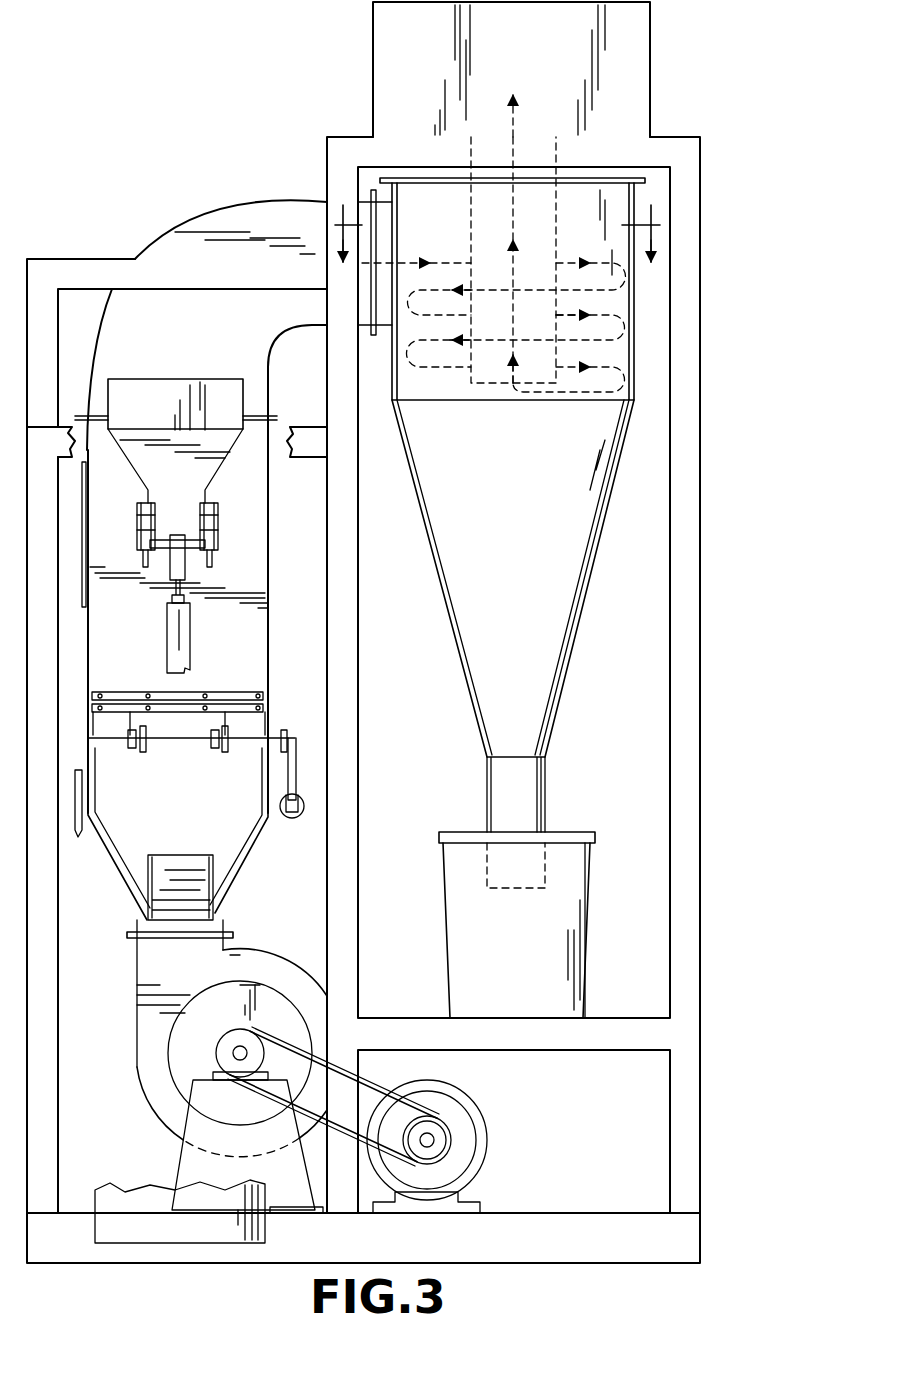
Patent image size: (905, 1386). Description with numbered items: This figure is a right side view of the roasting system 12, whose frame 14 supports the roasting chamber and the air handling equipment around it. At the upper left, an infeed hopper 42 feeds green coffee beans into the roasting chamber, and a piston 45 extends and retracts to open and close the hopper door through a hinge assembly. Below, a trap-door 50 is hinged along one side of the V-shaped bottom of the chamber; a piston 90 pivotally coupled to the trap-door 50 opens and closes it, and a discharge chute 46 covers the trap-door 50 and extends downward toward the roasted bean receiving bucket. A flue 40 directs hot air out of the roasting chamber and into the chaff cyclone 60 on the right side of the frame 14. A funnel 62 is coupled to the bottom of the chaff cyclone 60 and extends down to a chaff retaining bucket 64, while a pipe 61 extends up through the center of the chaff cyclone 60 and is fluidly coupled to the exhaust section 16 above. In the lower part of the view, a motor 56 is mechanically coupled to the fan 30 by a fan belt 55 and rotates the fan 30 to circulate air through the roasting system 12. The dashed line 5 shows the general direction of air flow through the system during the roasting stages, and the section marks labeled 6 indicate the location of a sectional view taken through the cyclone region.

The roasting system 12 is at (746, 78).
The frame 14 is at (700, 163).
The exhaust section 16 is at (652, 68).
The flue 40 is at (182, 222).
The infeed hopper 42 is at (148, 380).
The piston 45 is at (194, 636).
The trap-door 50 is at (118, 720).
The piston 90 is at (293, 820).
The discharge chute 46 is at (107, 853).
The fan 30 is at (137, 1087).
The fan belt 55 is at (373, 1085).
The motor 56 is at (488, 1163).
The chaff cyclone 60 is at (636, 331).
The pipe 61 is at (558, 238).
The dashed line 5 is at (440, 262).
The section line 6- 6 is at (496, 228).
The funnel 62 is at (571, 666).
The chaff retaining bucket 64 is at (580, 832).